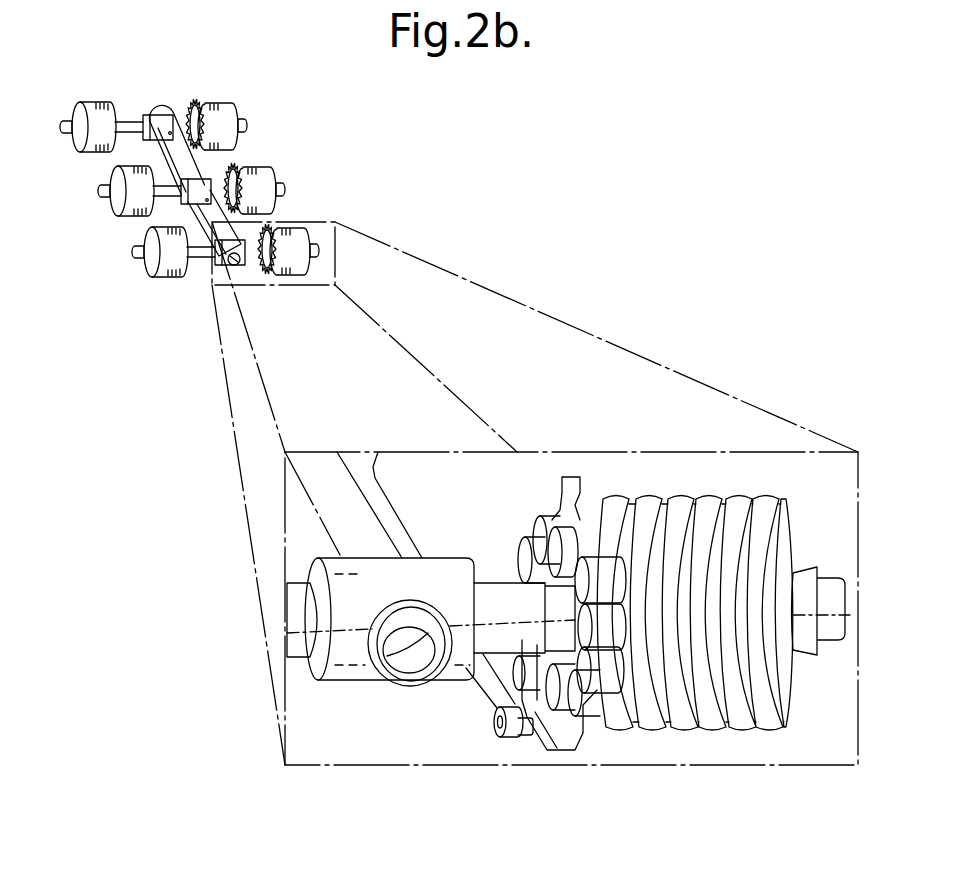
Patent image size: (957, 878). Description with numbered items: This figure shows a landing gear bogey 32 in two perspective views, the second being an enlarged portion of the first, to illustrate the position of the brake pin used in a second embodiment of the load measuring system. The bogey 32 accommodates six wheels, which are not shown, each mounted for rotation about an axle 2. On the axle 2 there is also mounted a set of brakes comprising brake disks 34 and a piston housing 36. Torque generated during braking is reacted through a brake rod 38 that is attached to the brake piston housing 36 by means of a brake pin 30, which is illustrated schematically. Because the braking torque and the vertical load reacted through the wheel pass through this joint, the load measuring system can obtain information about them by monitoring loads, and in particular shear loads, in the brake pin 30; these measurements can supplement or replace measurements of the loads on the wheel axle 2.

The bogey 32 is at (289, 174).
The axle 2 is at (503, 592).
The brake rod 38 is at (480, 693).
The brake pin 30 is at (532, 746).
The piston housing 36 is at (567, 740).
The brake disks 34 is at (727, 718).